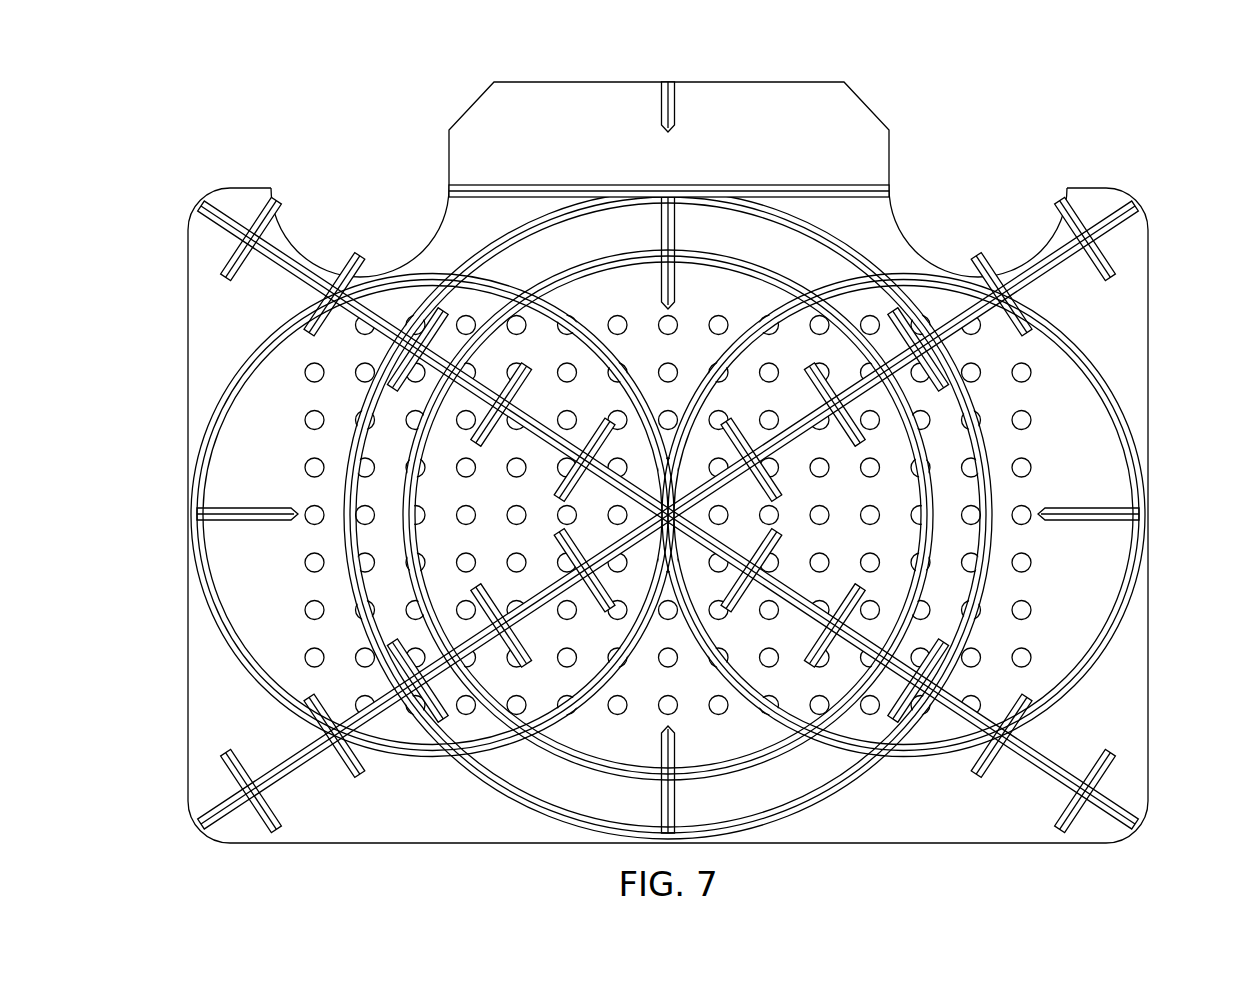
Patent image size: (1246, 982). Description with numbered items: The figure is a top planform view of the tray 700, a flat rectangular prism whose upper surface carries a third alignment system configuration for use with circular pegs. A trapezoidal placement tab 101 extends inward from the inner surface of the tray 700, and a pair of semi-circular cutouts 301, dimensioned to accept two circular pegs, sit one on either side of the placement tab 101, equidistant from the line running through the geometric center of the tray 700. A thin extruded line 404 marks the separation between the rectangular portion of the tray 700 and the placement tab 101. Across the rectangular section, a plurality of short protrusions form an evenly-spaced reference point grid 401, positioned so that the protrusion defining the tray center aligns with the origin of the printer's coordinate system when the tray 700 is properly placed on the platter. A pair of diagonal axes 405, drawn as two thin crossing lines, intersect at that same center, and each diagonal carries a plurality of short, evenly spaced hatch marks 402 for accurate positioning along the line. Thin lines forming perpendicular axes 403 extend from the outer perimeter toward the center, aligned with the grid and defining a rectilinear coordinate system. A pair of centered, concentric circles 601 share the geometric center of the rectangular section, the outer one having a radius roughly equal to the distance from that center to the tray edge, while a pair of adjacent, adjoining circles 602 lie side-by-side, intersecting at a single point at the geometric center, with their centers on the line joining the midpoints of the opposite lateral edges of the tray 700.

The placement tab 101 is at (581, 82).
The circular cutouts 301 is at (360, 202).
The reference point grid 401 is at (946, 515).
The hatch marks 402 is at (212, 782).
The perpendicular axes 403 is at (680, 822).
The line 404 is at (514, 186).
The diagonal axes 405 is at (1042, 260).
The concentric circles 601 is at (542, 818).
The adjacent, adjoining circles 602 is at (1130, 607).
The tray 700 is at (1026, 88).